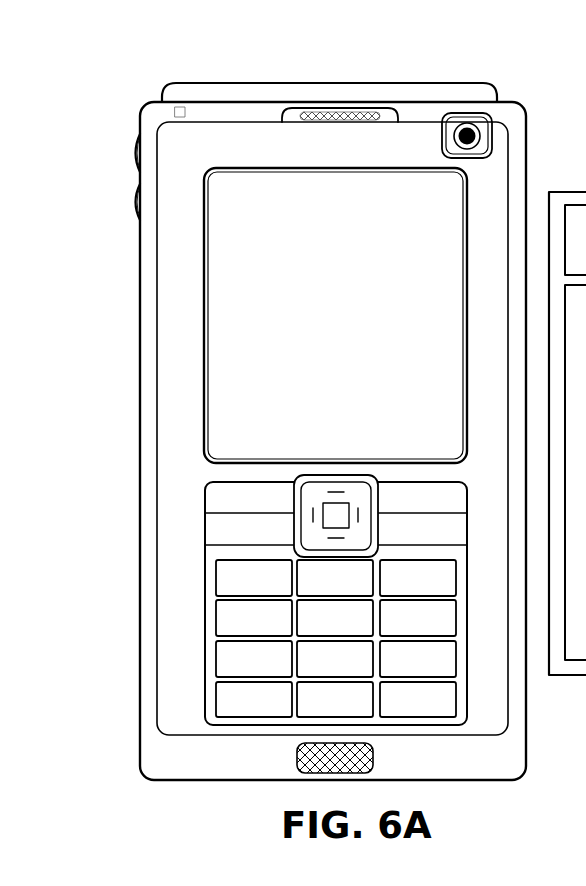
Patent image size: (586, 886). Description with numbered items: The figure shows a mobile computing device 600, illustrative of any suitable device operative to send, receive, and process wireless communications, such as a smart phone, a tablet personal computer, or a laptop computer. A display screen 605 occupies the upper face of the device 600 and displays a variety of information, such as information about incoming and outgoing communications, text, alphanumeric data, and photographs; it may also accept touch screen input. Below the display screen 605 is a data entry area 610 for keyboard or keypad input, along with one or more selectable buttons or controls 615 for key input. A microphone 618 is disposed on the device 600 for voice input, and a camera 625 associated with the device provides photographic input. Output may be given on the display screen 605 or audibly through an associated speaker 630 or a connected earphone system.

The mobile computing device 600 is at (138, 107).
The display screen 605 is at (238, 302).
The data entry area 610 is at (207, 523).
The selectable buttons or controls 615 is at (227, 619).
The microphone 618 is at (299, 760).
The camera 625 is at (473, 128).
The speaker 630 is at (343, 118).